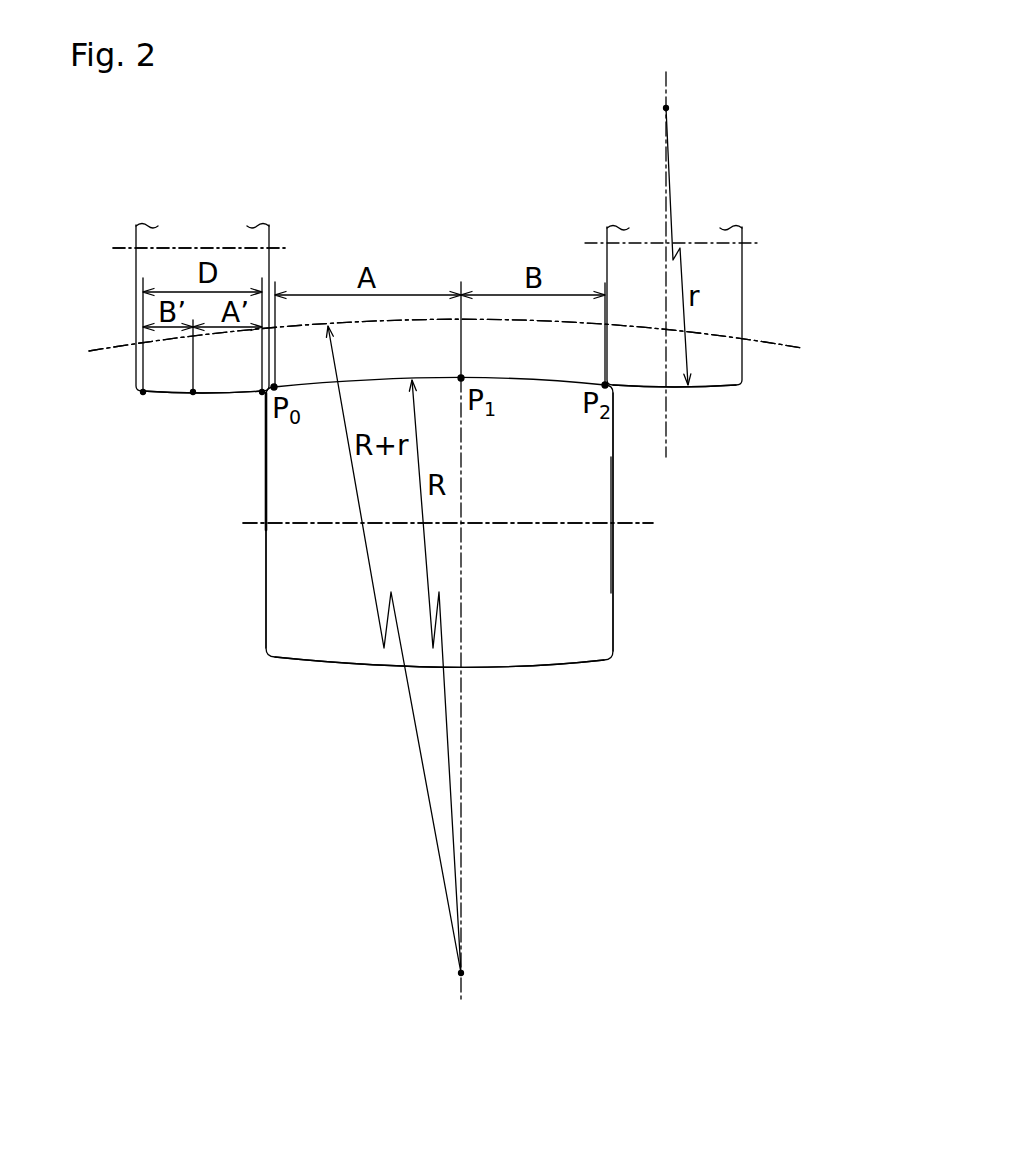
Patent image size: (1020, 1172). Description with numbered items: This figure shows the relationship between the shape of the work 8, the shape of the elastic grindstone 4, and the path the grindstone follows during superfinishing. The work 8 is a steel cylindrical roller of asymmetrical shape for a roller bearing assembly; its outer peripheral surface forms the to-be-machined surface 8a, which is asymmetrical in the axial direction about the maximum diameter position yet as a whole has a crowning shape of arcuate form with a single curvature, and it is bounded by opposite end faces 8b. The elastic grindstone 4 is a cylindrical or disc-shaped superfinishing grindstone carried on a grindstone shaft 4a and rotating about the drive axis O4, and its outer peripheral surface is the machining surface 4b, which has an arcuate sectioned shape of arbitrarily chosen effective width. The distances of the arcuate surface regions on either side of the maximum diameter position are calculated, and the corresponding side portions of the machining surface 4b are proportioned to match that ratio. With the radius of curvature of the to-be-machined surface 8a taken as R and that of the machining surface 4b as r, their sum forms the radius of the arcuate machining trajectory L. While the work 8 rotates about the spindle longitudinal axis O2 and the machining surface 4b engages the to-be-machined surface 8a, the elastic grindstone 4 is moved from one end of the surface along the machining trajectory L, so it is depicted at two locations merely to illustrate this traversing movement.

The elastic grindstone 4 is at (147, 267).
The grindstone shaft 4a is at (287, 248).
The machining surface 4b is at (193, 392).
The work 8 is at (275, 611).
The to-be-machined surface 8a is at (345, 665).
The end faces 8b is at (266, 445).
The drive axis O4 is at (220, 248).
The spindle longitudinal axis O2 is at (635, 523).
The machining trajectory L is at (110, 345).